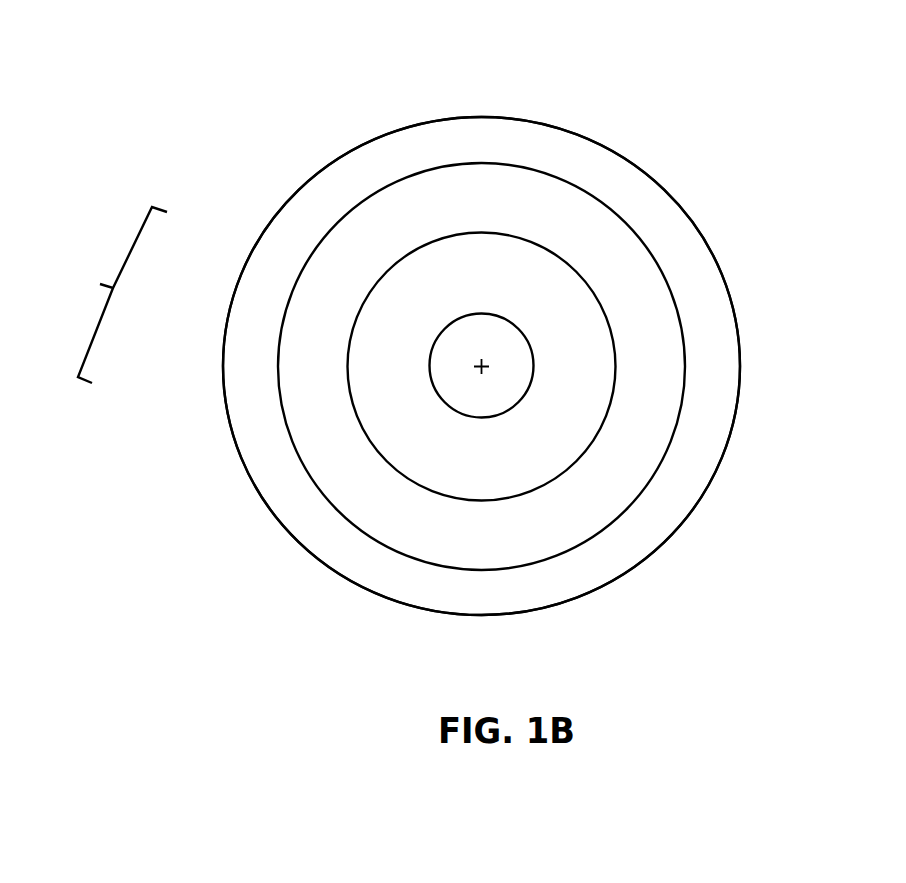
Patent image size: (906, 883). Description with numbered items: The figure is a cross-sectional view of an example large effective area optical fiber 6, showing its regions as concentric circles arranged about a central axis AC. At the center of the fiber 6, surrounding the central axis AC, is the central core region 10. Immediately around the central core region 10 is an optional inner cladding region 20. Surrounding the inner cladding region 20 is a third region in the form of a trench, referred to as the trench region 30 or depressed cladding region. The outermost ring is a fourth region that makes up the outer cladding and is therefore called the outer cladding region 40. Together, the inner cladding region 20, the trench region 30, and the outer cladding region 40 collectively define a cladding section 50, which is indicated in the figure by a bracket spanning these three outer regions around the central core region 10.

The large effective area optical fiber 6 is at (268, 97).
The central core region 10 is at (472, 345).
The inner cladding region 20 is at (393, 337).
The trench region 30 is at (293, 343).
The outer cladding region 40 is at (255, 393).
The cladding section 50 is at (114, 295).
The central axis AC is at (477, 369).